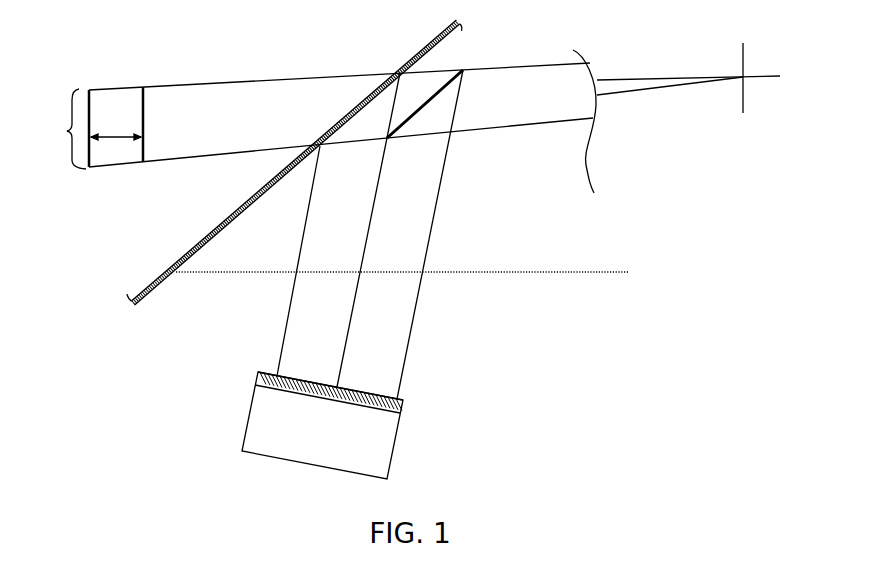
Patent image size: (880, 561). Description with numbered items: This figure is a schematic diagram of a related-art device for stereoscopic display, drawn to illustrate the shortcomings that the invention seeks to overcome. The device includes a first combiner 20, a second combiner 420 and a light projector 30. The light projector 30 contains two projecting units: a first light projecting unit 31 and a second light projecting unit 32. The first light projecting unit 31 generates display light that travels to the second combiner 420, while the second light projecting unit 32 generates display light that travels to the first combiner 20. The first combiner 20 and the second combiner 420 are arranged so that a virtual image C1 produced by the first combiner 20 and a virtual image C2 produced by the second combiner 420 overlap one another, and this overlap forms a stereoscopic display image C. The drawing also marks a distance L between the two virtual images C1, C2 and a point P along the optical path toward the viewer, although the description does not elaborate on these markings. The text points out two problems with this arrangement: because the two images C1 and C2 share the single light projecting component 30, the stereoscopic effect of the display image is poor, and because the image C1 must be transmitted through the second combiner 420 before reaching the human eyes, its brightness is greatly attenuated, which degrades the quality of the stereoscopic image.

The first combiner 20 is at (349, 115).
The second combiner 420 is at (423, 112).
The light projector 30 is at (345, 407).
The first light projecting unit 31 is at (365, 388).
The second light projecting unit 32 is at (308, 378).
The stereoscopic display image C is at (69, 129).
The virtual image of the first combiner C1 is at (93, 154).
The virtual image of the second combiner C2 is at (143, 147).
The distance between cross-sections L is at (114, 137).
The focal point P is at (746, 75).